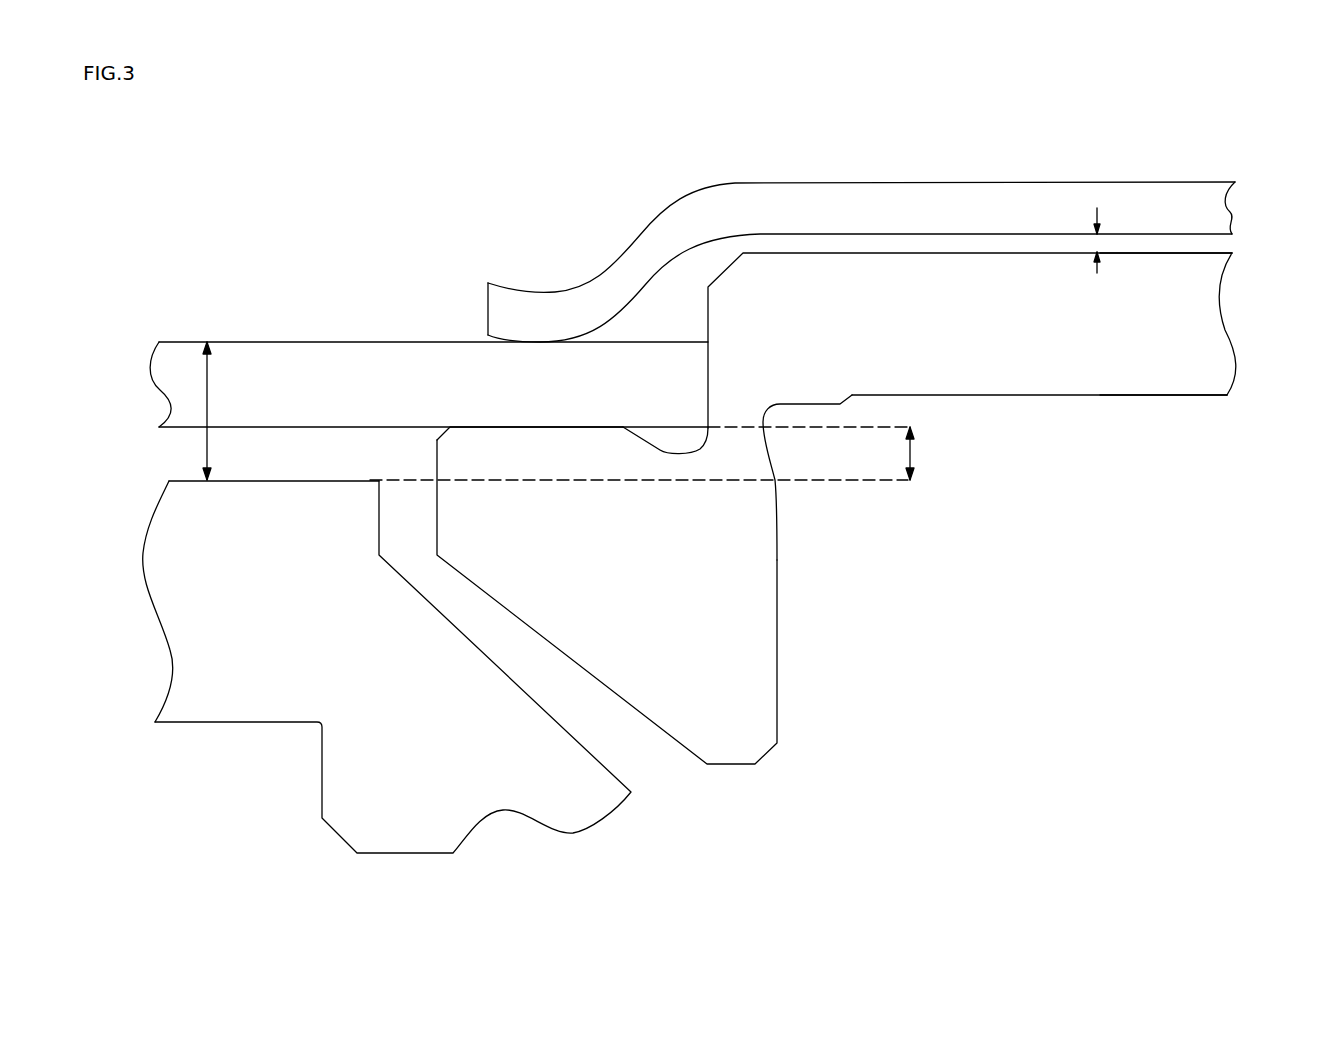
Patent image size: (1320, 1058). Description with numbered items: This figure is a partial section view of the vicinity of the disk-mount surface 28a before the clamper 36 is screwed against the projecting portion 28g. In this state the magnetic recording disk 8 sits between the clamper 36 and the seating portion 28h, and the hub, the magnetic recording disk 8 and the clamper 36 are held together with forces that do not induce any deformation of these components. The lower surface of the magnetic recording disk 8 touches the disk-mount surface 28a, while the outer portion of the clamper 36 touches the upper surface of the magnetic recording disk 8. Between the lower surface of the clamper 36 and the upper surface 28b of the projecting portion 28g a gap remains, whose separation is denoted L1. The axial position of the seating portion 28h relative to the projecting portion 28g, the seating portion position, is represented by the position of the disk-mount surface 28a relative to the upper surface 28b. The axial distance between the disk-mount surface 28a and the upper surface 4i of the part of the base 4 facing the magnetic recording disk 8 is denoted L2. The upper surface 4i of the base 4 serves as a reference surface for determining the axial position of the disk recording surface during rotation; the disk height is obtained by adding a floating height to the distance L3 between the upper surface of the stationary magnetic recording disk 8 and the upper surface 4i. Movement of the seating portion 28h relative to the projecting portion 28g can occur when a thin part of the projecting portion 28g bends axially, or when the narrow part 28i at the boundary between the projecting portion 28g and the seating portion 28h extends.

The base 4 is at (229, 705).
The upper surface of the base 4i is at (263, 481).
The magnetic recording disk 8 is at (187, 397).
The disk-mount surface 28a is at (487, 427).
The upper surface of the projecting portion 28b is at (1182, 250).
The projecting portion 28g is at (1207, 335).
The seating portion 28h is at (752, 710).
The narrow part 28i is at (743, 442).
The clamper 36 is at (1215, 217).
The gap separation L1 is at (1097, 243).
The axial distance between disk-mount surface and base upper surface L2 is at (910, 450).
The distance between disk upper surface and base upper surface L3 is at (207, 455).